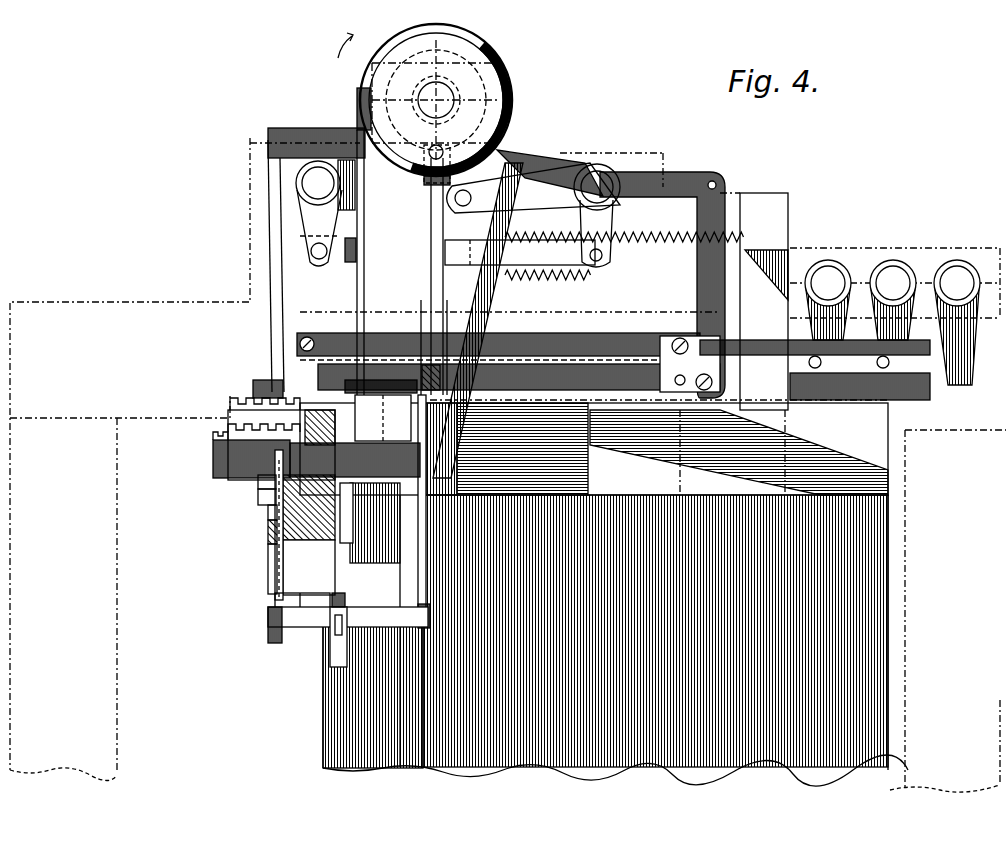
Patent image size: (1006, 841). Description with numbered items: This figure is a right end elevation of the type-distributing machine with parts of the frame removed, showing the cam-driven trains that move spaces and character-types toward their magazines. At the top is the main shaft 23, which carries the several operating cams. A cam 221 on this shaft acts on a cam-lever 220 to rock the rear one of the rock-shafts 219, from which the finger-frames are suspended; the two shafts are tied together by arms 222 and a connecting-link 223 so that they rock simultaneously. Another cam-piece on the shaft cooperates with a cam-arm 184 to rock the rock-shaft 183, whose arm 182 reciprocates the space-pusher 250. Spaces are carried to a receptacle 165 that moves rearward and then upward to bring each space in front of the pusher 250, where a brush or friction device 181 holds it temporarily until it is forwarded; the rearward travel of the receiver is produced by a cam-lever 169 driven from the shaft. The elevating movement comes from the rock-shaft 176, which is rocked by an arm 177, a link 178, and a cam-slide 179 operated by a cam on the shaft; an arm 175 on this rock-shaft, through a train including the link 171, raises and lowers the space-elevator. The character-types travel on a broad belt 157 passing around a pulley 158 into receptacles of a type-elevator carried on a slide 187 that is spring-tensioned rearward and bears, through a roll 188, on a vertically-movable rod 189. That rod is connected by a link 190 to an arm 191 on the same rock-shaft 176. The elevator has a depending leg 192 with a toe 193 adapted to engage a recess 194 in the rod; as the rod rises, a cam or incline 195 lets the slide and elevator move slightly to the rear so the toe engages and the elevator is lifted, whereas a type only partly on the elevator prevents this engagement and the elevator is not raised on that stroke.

The shaft 23 is at (441, 93).
The cam 221 is at (512, 84).
The cam-arm 184 is at (362, 104).
The rock-shaft 183 is at (270, 134).
The arms 222 is at (300, 215).
The cam-lever 220 is at (565, 165).
The rock-shafts 219 is at (600, 182).
The connecting-link 223 is at (520, 260).
The arm 182 is at (358, 288).
The cam-slide 179 is at (430, 291).
The cam-lever 169 is at (482, 292).
The space-pusher 250 is at (300, 380).
The receptacle 165 is at (222, 438).
The brush or friction device 181 is at (353, 425).
The broad belt 157 is at (345, 500).
The pulley 158 is at (432, 492).
The cam or incline 195 is at (309, 502).
The vertically-movable rod 189 is at (278, 525).
The slide 187 is at (256, 478).
The roll 188 is at (258, 497).
The depending leg 192 is at (270, 505).
The toe 193 is at (272, 510).
The recess 194 is at (275, 520).
The link 190 is at (274, 604).
The arm 191 is at (268, 632).
The rock-shaft 176 is at (300, 627).
The arm 175 is at (333, 640).
The link 171 is at (343, 596).
The arm 177 is at (431, 611).
The link 178 is at (427, 574).